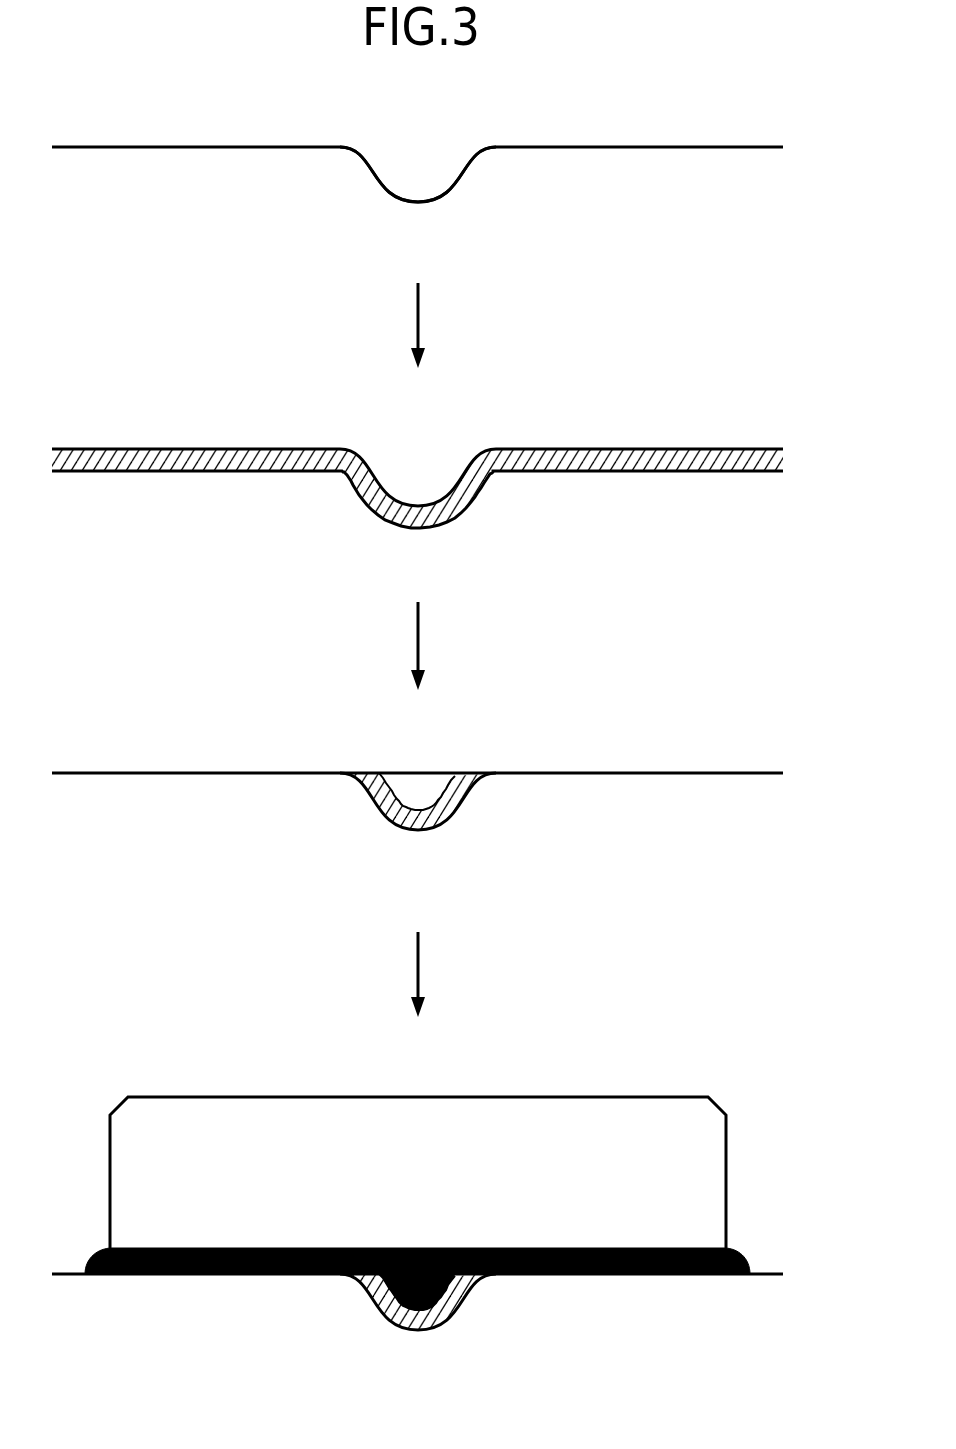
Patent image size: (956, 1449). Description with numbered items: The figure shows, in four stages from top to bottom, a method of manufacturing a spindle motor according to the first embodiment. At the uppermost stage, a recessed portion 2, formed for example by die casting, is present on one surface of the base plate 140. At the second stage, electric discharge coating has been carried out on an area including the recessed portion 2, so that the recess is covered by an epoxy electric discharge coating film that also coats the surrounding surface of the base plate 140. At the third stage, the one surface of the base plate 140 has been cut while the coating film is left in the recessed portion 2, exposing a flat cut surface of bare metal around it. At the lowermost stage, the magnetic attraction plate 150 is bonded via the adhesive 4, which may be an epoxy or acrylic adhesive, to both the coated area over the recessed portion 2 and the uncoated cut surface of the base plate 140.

The recessed portion 2 is at (410, 176).
The base plate 140 is at (632, 145).
The magnetic attraction plate 150 is at (705, 1138).
The adhesive 4 is at (742, 1257).